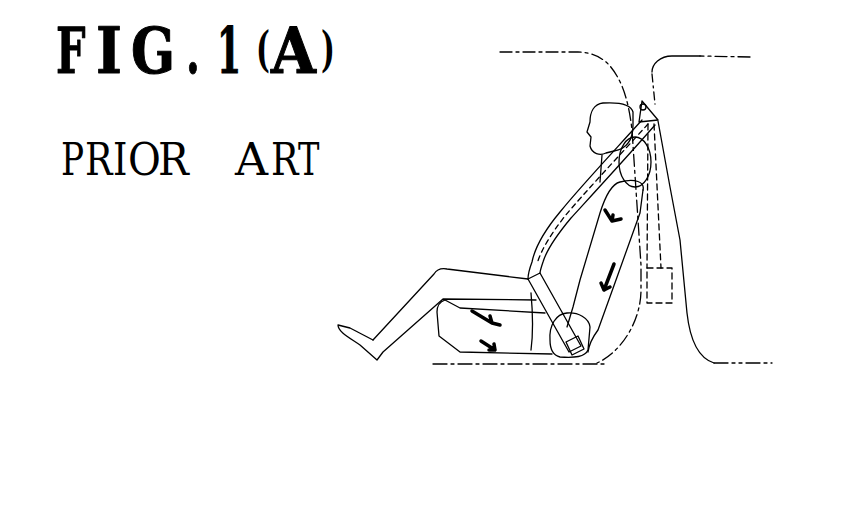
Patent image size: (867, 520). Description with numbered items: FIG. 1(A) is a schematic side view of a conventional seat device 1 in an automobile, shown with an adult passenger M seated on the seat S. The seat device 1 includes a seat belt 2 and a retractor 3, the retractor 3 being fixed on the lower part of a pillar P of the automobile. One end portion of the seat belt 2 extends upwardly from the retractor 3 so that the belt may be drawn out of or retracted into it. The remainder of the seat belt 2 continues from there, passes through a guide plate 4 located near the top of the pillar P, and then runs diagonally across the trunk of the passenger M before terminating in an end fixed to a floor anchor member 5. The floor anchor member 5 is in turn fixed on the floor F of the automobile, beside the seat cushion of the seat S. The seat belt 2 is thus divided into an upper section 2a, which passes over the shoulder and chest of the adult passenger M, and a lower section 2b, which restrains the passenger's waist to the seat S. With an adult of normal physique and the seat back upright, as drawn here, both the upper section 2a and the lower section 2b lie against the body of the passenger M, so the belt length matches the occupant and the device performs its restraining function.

The seat device 1 is at (552, 206).
The seat belt 2 is at (573, 192).
The upper section of seat belt 2a is at (540, 243).
The lower section of seat belt 2b is at (531, 350).
The retractor 3 is at (672, 281).
The guide plate 4 is at (643, 100).
The floor anchor member 5 is at (574, 357).
The adult passenger M is at (617, 238).
The pillar P is at (652, 73).
The seat S is at (467, 355).
The floor F is at (507, 365).